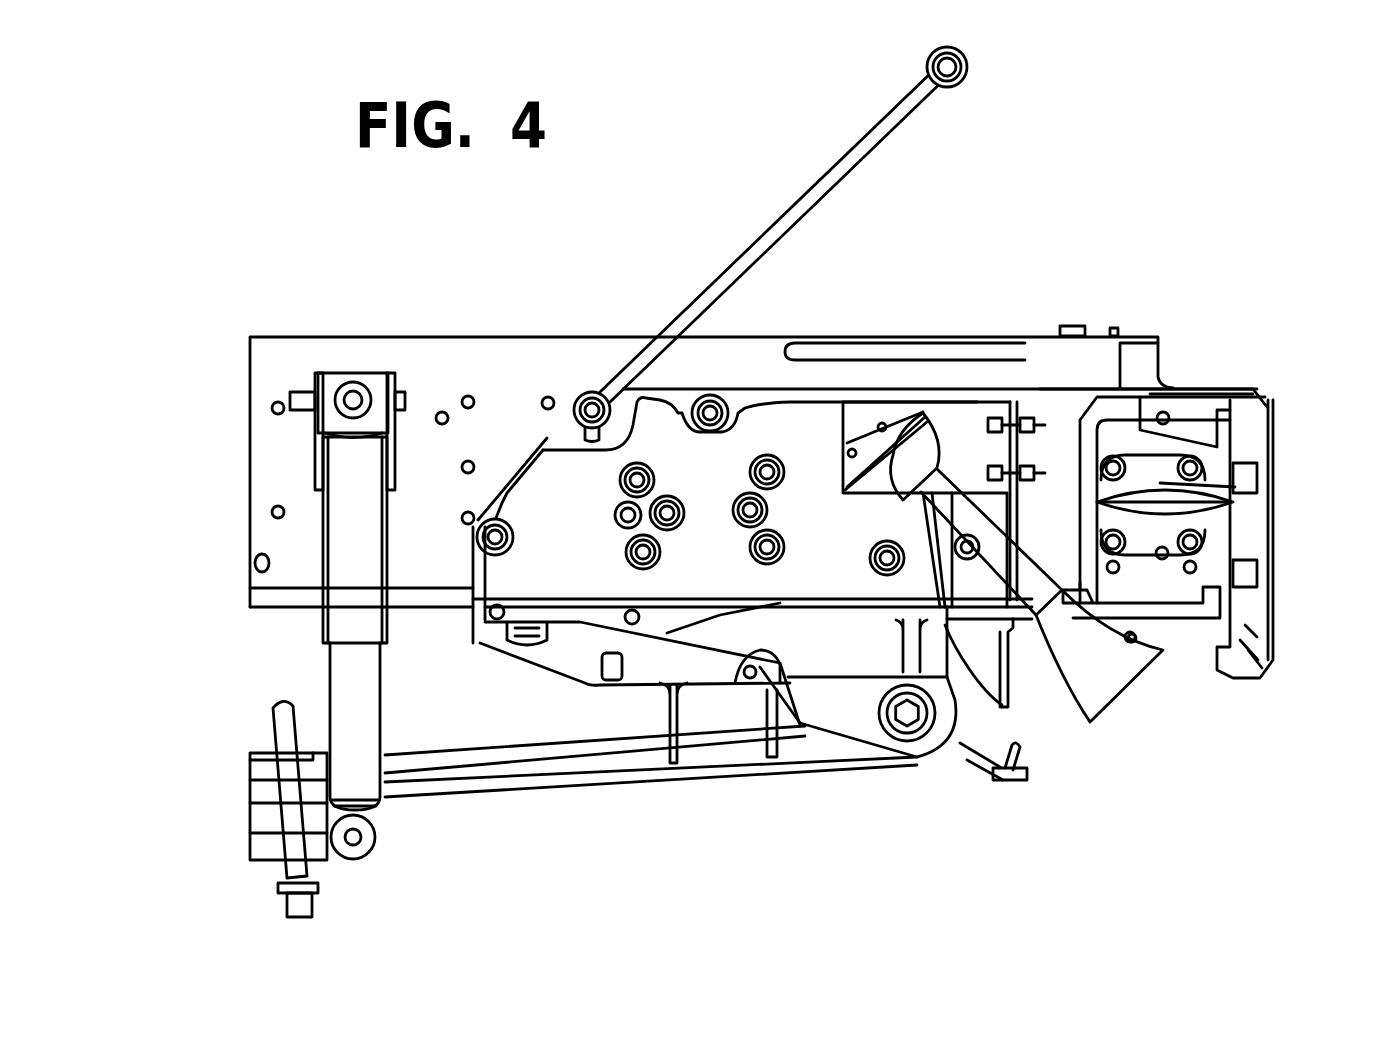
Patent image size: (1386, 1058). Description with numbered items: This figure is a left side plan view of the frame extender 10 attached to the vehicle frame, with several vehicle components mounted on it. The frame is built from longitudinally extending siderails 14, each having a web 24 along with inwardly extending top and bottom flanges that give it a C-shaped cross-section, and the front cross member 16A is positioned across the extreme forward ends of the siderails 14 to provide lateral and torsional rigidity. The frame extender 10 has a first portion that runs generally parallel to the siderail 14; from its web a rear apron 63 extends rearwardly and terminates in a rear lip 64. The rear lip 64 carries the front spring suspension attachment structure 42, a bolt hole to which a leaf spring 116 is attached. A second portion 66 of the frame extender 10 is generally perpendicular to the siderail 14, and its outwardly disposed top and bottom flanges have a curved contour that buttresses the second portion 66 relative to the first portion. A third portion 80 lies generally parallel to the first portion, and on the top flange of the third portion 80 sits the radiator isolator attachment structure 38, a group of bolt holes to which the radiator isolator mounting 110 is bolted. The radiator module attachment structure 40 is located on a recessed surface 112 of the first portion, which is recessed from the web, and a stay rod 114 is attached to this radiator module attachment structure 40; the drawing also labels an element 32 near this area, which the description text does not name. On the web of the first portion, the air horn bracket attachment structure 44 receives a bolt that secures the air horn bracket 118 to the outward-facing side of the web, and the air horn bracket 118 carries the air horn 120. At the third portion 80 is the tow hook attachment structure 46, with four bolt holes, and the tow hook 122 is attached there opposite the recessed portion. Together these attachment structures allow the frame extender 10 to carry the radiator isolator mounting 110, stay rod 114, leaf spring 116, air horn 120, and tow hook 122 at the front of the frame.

The frame extender 10 is at (520, 572).
The siderail 14 is at (270, 465).
The front cross member 16A is at (1273, 655).
The web 24 is at (277, 530).
The lever bracket 32 is at (665, 450).
The radiator isolator attachment structure 38 is at (1097, 382).
The radiator module attachment structure 40 is at (565, 432).
The front spring suspension attachment structure 42 is at (917, 737).
The air horn bracket attachment structure 44 is at (982, 422).
The tow hook attachment structure 46 is at (1195, 540).
The rear apron 63 is at (760, 650).
The rear lip 64 is at (850, 717).
The second portion 66 is at (1003, 705).
The third portion 80 is at (1160, 587).
The radiator isolator mounting 110 is at (1097, 360).
The recessed surface 112 is at (553, 427).
The stay rod 114 is at (755, 252).
The leaf spring 116 is at (569, 785).
The air horn bracket 118 is at (857, 415).
The air horn 120 is at (1117, 687).
The tow hook 122 is at (1195, 492).